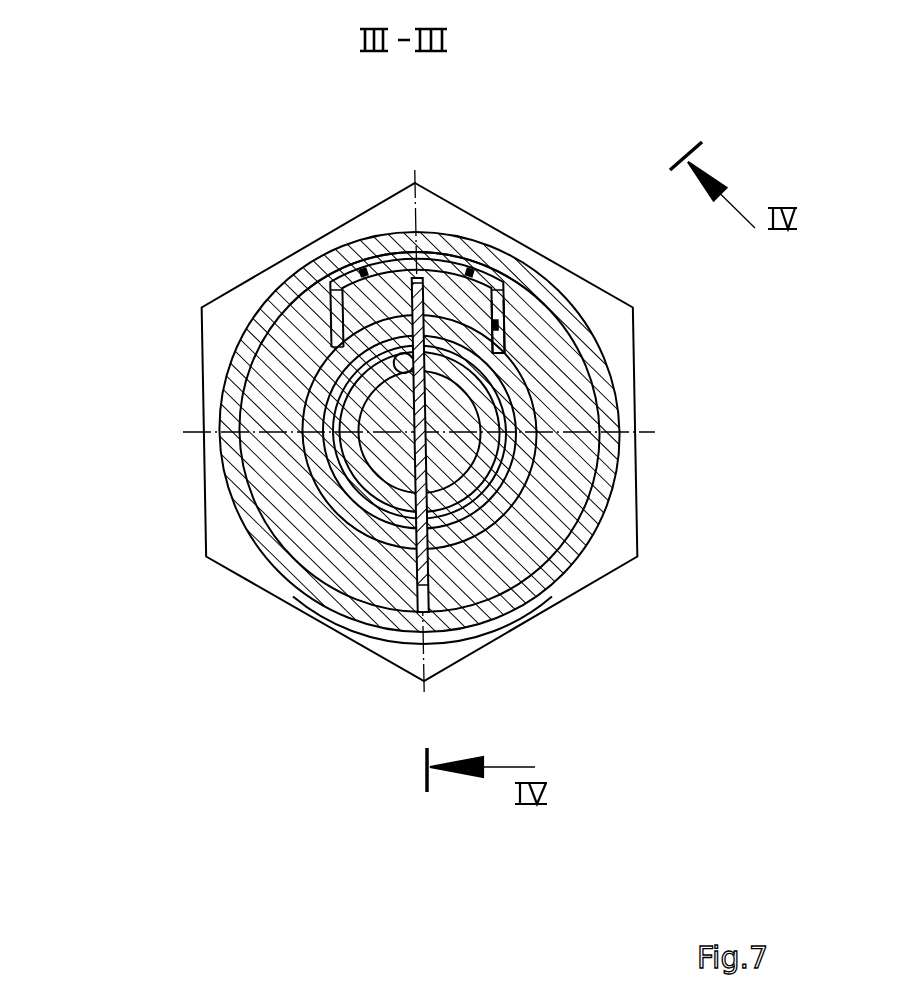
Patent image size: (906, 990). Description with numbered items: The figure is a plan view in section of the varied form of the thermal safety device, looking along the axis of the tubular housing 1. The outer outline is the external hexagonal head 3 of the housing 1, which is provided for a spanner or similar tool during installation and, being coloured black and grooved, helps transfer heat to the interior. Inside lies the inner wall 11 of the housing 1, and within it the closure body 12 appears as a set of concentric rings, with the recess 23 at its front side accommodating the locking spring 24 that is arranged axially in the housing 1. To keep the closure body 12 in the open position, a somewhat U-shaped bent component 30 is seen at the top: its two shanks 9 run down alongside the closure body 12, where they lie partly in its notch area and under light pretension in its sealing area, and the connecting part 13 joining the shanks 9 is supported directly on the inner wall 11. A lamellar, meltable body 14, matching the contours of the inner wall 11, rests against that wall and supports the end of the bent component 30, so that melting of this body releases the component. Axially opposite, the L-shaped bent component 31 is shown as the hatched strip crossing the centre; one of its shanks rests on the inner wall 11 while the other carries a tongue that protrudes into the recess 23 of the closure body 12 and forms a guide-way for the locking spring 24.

The housing 1 is at (610, 447).
The hexagonal head 3 is at (613, 545).
The shanks 9 is at (495, 328).
The inner wall 11 is at (508, 587).
The closure body 12 is at (325, 480).
The connecting part 13 is at (328, 262).
The meltable body 14 is at (463, 260).
The recess 23 is at (383, 415).
The locking spring 24 is at (482, 468).
The U-shaped bent component 30 is at (506, 312).
The L-shaped bent component 31 is at (423, 547).